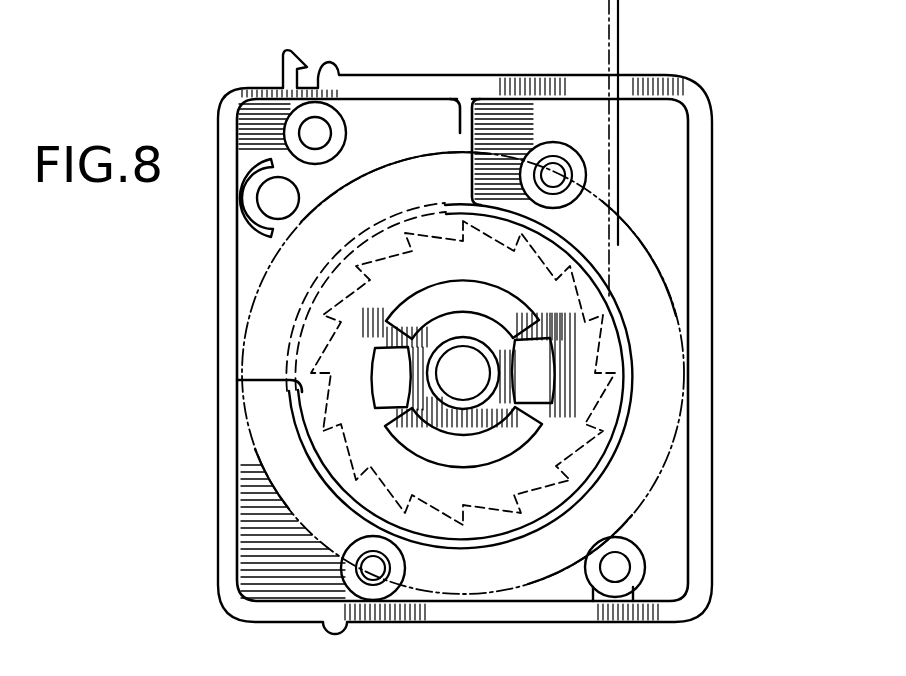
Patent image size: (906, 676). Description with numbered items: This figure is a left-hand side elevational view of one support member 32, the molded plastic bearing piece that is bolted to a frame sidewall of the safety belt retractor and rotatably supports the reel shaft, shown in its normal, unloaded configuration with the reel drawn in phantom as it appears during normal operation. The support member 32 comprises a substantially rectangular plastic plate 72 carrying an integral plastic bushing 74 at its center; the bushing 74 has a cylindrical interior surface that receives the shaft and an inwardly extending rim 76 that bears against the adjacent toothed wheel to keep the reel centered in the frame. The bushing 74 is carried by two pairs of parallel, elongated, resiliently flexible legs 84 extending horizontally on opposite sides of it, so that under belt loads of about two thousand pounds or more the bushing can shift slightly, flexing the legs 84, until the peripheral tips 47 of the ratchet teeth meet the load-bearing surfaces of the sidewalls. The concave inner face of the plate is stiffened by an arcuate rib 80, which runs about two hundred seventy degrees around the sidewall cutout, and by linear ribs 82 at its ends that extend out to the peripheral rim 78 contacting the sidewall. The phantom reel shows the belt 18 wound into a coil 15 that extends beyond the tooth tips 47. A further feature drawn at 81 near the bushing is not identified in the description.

The coil 15 is at (645, 210).
The belt 18 is at (623, 46).
The support member 32 is at (401, 146).
The tips of the ratchet teeth 47 is at (302, 320).
The plastic plate 72 is at (522, 581).
The bushing 74 is at (433, 425).
The rim 76 is at (470, 337).
The peripheral rim 78 is at (708, 304).
The arcuate rib 80 is at (588, 497).
The lobe 81 is at (524, 430).
The linear ribs 82 is at (457, 130).
The legs 84 is at (398, 323).